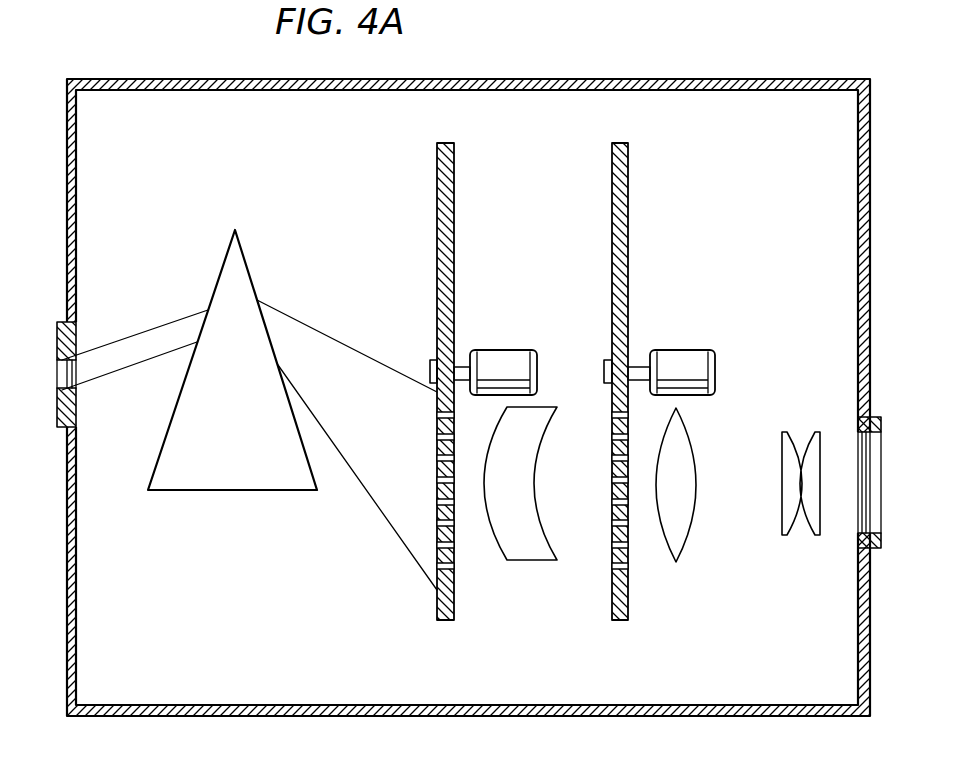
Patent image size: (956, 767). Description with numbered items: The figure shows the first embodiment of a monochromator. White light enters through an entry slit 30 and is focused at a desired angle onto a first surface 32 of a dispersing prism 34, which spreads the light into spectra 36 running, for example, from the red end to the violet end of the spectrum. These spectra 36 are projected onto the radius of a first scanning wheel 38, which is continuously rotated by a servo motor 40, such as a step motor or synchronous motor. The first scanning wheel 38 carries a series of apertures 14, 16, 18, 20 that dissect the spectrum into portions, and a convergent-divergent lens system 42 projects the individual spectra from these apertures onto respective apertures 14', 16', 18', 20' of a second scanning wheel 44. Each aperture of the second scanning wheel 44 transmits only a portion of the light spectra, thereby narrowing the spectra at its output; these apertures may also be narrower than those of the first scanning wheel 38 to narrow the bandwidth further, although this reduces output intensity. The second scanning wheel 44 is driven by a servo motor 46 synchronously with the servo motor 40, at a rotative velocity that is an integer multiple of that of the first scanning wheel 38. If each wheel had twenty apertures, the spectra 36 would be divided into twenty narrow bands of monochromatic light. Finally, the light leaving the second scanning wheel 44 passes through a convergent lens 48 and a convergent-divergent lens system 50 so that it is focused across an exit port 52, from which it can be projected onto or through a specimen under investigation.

The entry slit 30 is at (62, 372).
The first surface 32 is at (220, 276).
The dispersing prism 34 is at (243, 447).
The light spectra 36 is at (350, 349).
The first scanning wheel 38 is at (438, 177).
The aperture 20 is at (417, 500).
The aperture 18 is at (411, 535).
The aperture 16 is at (411, 558).
The aperture 14 is at (411, 583).
The servo motor 40 is at (513, 350).
The convergent-divergent lens system 42 is at (525, 565).
The second scanning wheel 44 is at (612, 180).
The aperture 20' is at (595, 512).
The aperture 18' is at (595, 546).
The aperture 16' is at (595, 571).
The aperture 14' is at (595, 594).
The servo motor 46 is at (690, 350).
The convergent lens 48 is at (696, 465).
The convergent-divergent lens system 50 is at (782, 520).
The exit port 52 is at (875, 460).